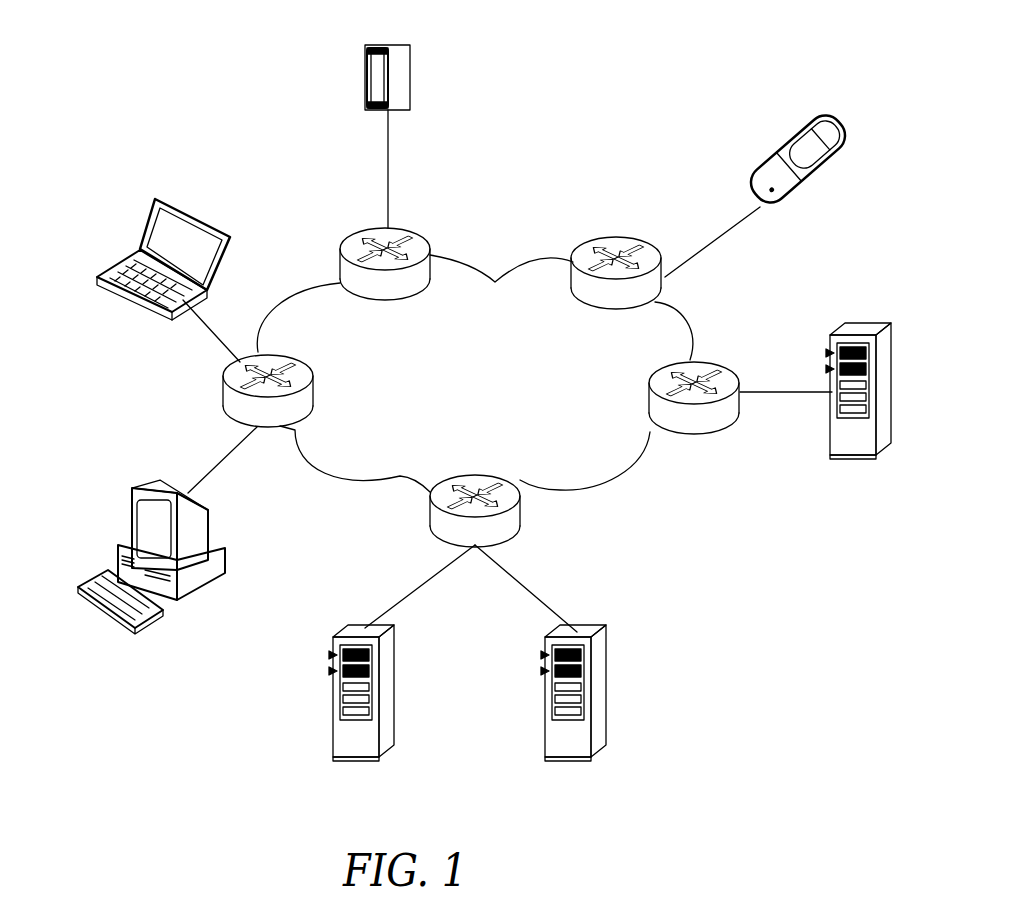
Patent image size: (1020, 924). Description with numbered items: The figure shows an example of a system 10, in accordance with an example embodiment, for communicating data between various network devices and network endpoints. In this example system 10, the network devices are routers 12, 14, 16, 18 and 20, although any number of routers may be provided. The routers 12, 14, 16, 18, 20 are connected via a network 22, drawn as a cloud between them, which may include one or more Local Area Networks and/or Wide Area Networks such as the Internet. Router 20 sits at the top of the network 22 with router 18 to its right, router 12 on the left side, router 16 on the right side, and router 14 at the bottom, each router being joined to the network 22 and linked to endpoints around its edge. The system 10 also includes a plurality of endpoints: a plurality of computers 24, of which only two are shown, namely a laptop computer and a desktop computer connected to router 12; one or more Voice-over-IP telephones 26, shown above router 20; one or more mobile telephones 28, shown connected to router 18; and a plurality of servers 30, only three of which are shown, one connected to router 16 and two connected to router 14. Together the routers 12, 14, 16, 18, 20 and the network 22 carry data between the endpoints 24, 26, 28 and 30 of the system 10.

The system 10 is at (159, 39).
The router 12 is at (234, 371).
The router 14 is at (489, 518).
The router 16 is at (729, 418).
The router 18 is at (587, 258).
The router 20 is at (390, 248).
The network (e.g., Internet) 22 is at (489, 403).
The computer 24 is at (130, 406).
The Voice-over-IP (VoIP) telephone 26 is at (424, 59).
The mobile telephone 28 is at (783, 184).
The server 30 is at (582, 546).